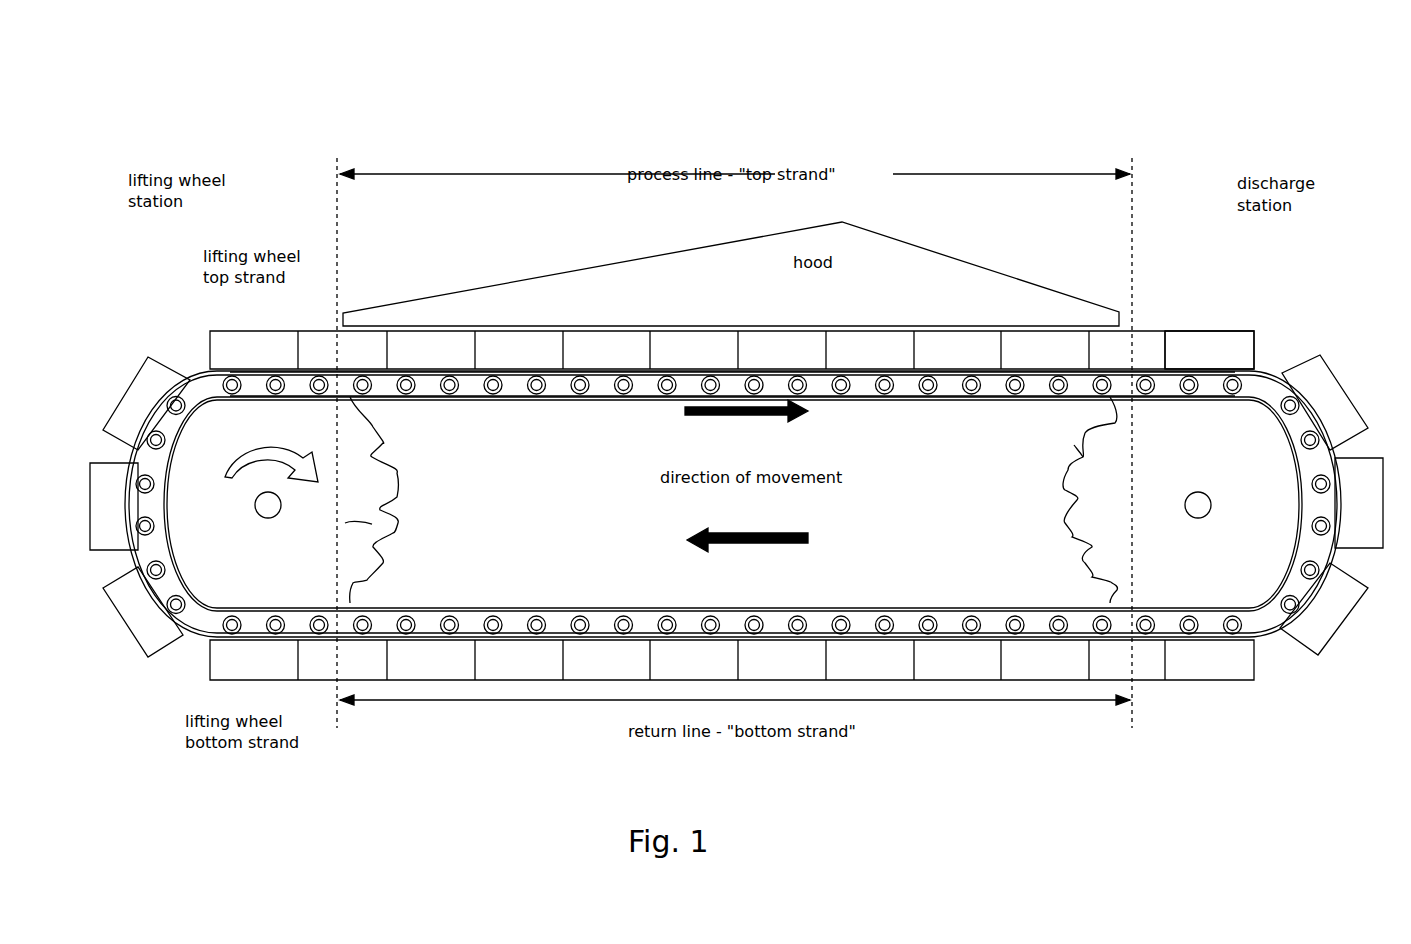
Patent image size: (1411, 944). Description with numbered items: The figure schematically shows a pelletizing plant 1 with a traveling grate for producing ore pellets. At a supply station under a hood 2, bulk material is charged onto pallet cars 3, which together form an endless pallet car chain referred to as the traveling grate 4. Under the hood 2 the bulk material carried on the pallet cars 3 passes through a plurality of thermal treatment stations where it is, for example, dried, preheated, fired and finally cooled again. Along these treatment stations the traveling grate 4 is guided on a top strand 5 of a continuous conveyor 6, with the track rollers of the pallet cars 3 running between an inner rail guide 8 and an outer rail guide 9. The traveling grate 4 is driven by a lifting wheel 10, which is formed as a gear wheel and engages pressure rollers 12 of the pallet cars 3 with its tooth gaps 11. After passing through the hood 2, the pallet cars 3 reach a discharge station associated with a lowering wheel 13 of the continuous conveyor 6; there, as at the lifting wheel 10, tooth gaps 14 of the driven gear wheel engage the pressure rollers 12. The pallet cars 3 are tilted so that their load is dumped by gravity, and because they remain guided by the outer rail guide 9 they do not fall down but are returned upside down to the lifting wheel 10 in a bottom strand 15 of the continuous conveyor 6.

The pelletizing plant 1 is at (1060, 117).
The hood 2 is at (931, 272).
The pallet car 3 is at (1216, 338).
The traveling grate 4 is at (1168, 325).
The top strand 5 is at (735, 178).
The continuous conveyor 6 is at (1327, 321).
The inner rail guide 8 is at (903, 398).
The outer rail guide 9 is at (1272, 640).
The lifting wheel 10 is at (393, 533).
The tooth gaps 11 is at (380, 460).
The pressure rollers 12 is at (583, 398).
The lowering wheel 13 is at (1110, 489).
The tooth gaps 14 is at (1085, 458).
The bottom strand 15 is at (735, 721).